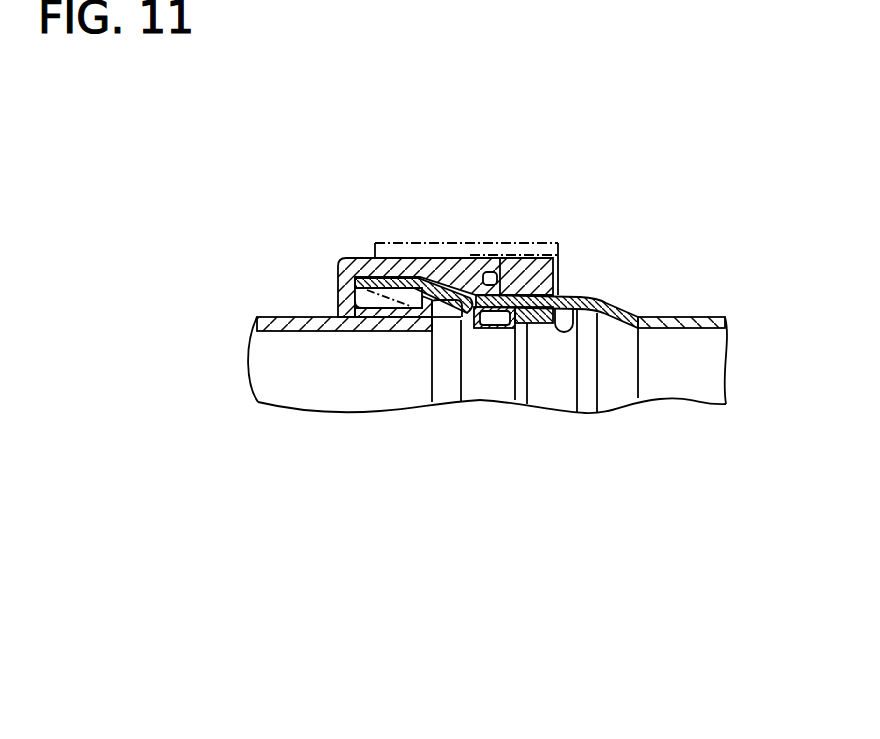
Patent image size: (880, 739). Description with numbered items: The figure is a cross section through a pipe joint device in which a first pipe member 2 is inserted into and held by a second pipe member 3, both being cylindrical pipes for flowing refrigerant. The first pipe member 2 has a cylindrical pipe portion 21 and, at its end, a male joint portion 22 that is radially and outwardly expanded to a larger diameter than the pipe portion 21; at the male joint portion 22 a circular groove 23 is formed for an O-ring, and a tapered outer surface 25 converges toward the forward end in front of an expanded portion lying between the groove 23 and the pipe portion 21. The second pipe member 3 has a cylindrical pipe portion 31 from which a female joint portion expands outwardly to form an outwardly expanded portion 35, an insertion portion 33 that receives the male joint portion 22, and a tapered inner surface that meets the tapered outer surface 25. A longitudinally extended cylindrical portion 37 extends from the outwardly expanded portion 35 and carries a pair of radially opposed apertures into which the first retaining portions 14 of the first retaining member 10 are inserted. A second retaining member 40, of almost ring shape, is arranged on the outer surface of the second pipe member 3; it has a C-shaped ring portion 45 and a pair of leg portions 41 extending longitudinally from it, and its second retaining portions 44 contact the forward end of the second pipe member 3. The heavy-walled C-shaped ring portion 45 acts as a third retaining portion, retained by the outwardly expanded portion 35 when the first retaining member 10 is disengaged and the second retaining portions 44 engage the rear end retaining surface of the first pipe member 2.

The first pipe member 2 is at (260, 314).
The cylindrical pipe portion 21 is at (292, 317).
The second pipe member 3 is at (680, 312).
The cylindrical pipe portion 31 is at (703, 317).
The first retaining member 10 is at (437, 241).
The first retaining portions 14 is at (400, 298).
The male joint portion 22 is at (542, 333).
The circular groove 23 is at (497, 328).
The tapered outer surface 25 is at (462, 307).
The insertion portion 33 is at (577, 296).
The outwardly expanded portion 35 is at (462, 262).
The longitudinally extended cylindrical portion 37 is at (362, 258).
The second retaining member 40 is at (476, 268).
The leg portions 41 is at (392, 278).
The second retaining portions 44 is at (338, 272).
The C-shaped ring portion 45 is at (493, 272).